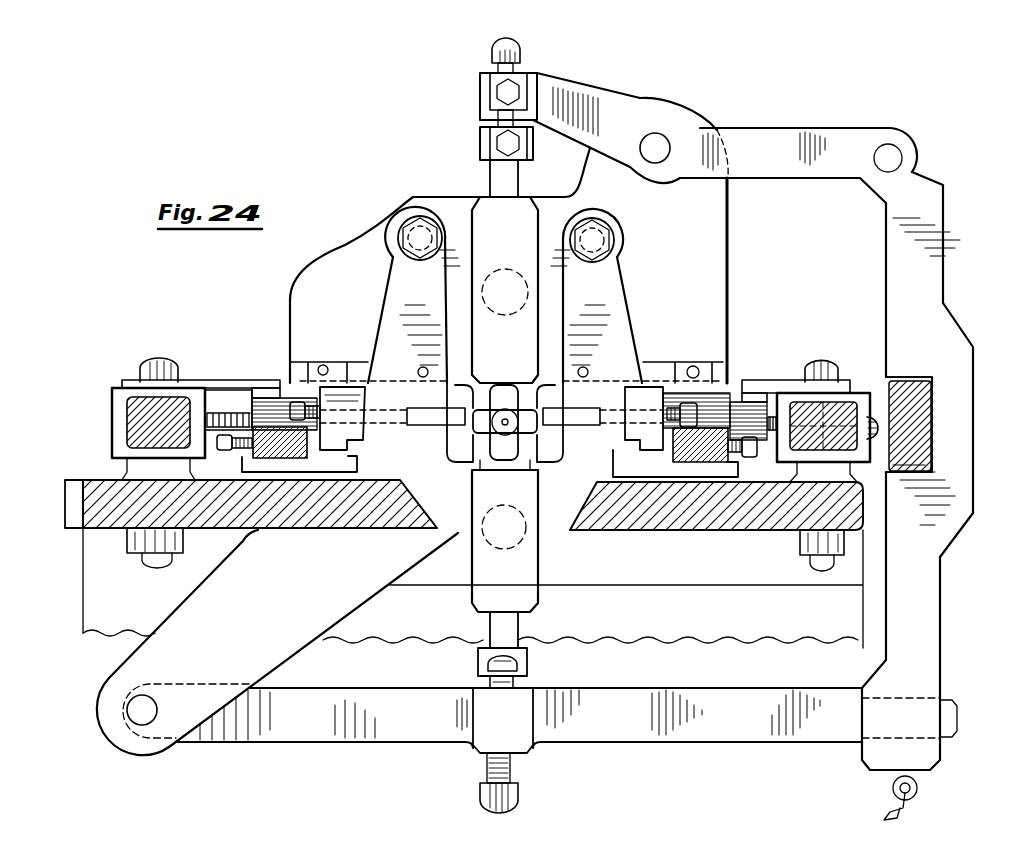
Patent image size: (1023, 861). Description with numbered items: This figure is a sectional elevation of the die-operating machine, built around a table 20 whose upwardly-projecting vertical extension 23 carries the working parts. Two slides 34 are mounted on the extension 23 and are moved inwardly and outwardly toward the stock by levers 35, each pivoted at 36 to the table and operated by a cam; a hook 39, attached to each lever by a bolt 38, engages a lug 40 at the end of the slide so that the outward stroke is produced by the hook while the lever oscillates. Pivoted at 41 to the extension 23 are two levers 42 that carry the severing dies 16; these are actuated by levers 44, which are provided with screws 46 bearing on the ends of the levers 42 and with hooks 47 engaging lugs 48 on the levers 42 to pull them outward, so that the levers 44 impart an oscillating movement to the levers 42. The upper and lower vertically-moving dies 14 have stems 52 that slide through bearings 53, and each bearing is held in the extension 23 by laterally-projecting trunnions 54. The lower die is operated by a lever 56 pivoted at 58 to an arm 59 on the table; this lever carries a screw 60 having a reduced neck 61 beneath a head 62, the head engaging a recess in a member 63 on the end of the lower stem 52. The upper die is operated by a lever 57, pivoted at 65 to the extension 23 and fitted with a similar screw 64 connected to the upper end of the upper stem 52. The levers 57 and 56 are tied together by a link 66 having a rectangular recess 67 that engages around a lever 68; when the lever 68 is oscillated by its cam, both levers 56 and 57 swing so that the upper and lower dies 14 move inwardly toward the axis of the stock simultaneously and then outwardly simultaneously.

The vertically-moving die 14 is at (498, 385).
The severing die 16 is at (465, 415).
The table 20 is at (110, 510).
The vertical extension 23 is at (712, 260).
The slide 34 is at (303, 386).
The lever 35 is at (130, 418).
The pivot 36 is at (866, 455).
The bolt 38 is at (160, 363).
The hook 39 is at (220, 385).
The lug 40 is at (258, 398).
The pivot 41 is at (413, 232).
The lever 42 is at (402, 300).
The lever 44 is at (278, 452).
The screw 46 is at (237, 448).
The hook 47 is at (328, 470).
The lug 48 is at (327, 448).
The stem 52 is at (503, 175).
The bearing 53 is at (480, 575).
The trunnion 54 is at (485, 273).
The lever 56 is at (650, 705).
The lever 57 is at (596, 118).
The pivot 58 is at (148, 705).
The arm 59 is at (277, 642).
The screw 60 is at (510, 770).
The reduced neck 61 is at (520, 683).
The head 62 is at (520, 662).
The member 63 is at (482, 660).
The screw 64 is at (514, 68).
The pivot 65 is at (660, 148).
The link 66 is at (950, 437).
The rectangular recess 67 is at (913, 378).
The lever 68 is at (913, 413).